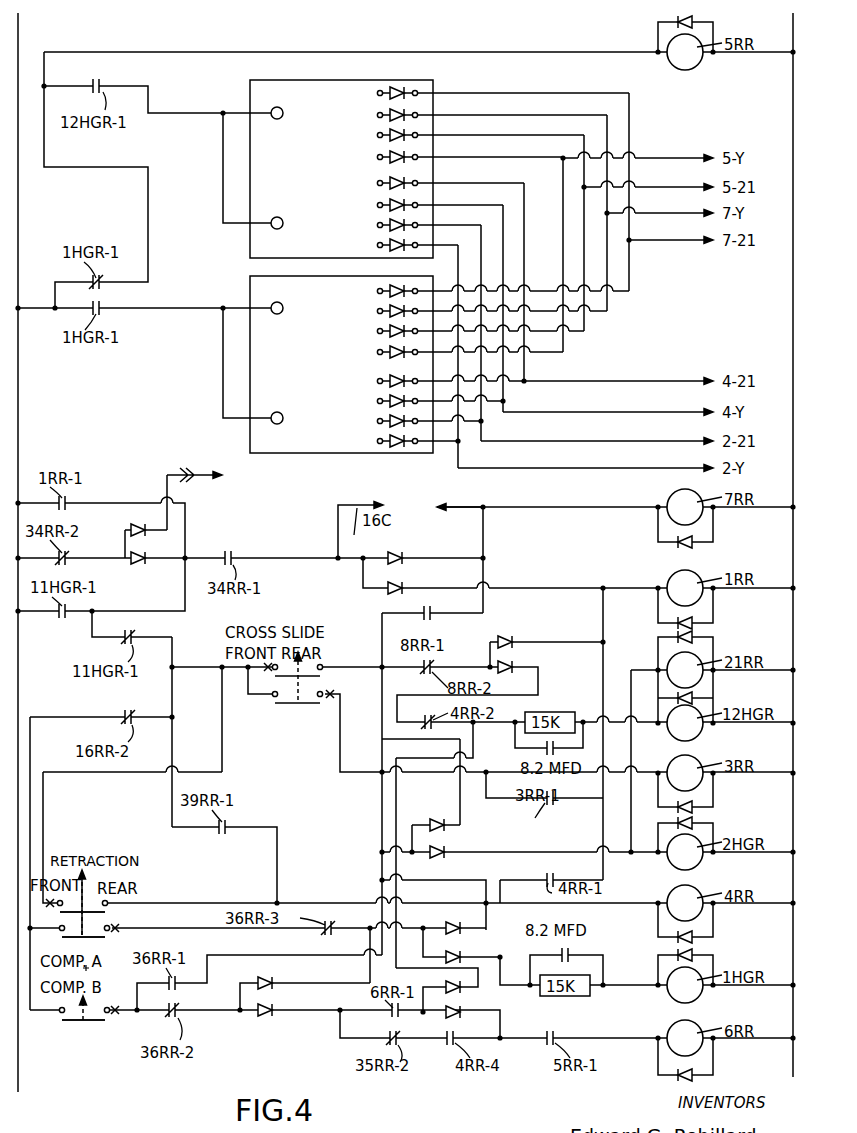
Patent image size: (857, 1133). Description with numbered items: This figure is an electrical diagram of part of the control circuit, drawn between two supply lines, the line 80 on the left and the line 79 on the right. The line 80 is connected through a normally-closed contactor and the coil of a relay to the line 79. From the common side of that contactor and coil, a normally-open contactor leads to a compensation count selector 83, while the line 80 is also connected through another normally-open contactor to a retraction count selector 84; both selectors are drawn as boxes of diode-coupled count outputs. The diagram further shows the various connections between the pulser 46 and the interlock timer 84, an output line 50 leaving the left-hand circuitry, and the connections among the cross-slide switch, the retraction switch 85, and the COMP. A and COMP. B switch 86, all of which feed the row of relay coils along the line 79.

The line 79 is at (793, 103).
The line 80 is at (18, 196).
The compensation count selector 83 is at (250, 88).
The retraction count selector 84 is at (250, 282).
The output line to control 50 is at (193, 488).
The variable speed pulser 46 is at (478, 506).
The retraction switch 85 is at (108, 913).
The COMP. A and COMP. B switch 86 is at (90, 1022).